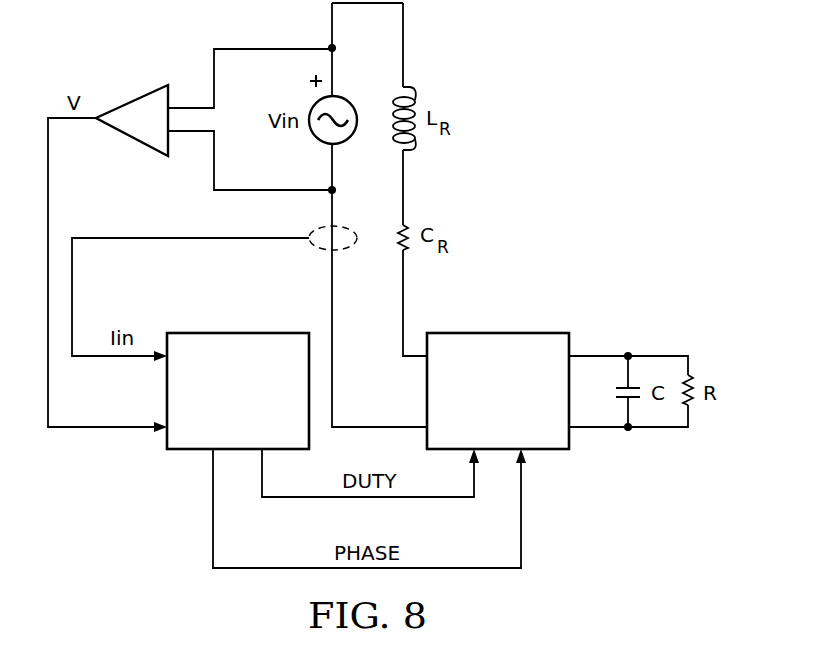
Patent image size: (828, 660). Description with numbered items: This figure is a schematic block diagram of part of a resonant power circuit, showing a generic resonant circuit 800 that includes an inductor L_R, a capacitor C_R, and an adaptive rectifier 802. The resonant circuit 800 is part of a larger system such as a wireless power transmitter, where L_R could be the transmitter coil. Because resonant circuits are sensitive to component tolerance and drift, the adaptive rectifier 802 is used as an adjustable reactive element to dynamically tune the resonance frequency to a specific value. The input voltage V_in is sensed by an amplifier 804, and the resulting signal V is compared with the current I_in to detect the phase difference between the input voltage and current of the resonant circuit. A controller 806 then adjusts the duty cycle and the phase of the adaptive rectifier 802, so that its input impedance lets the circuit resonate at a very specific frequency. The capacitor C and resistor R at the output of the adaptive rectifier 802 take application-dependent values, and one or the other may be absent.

The resonant circuit 800 is at (589, 111).
The adaptive rectifier 802 is at (522, 405).
The amplifier 804 is at (132, 99).
The controller 806 is at (190, 453).